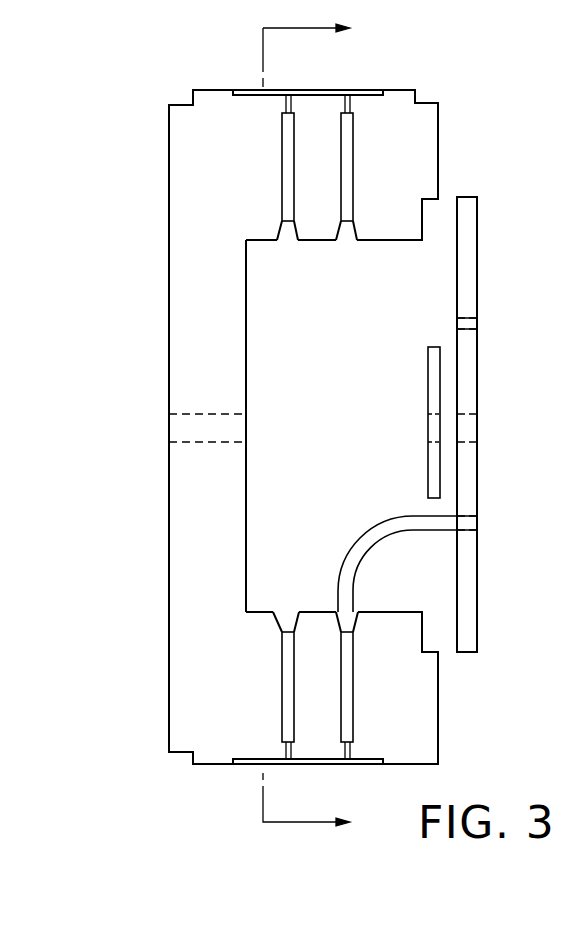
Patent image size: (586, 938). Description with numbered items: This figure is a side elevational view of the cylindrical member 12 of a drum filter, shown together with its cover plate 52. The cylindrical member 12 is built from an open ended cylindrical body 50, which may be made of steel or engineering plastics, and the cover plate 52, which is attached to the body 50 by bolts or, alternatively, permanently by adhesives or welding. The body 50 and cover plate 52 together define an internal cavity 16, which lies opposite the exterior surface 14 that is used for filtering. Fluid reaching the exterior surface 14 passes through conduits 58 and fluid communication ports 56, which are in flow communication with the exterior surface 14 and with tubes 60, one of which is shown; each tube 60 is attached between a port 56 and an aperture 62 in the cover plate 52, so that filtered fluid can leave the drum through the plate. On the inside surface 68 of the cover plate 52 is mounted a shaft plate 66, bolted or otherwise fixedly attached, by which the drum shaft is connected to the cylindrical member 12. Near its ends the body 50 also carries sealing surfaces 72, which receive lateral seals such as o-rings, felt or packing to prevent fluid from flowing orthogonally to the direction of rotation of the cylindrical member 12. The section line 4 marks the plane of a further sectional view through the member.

The section line 4- 4 is at (317, 426).
The cylindrical member 12 is at (287, 426).
The exterior surface 14 is at (365, 90).
The internal cavity 16 is at (353, 451).
The cylindrical body 50 is at (190, 678).
The cover plate 52 is at (465, 625).
The fluid communication ports 56 is at (288, 242).
The conduits 58 is at (282, 172).
The tube 60 is at (344, 539).
The apertures 62 is at (440, 323).
The shaft plate 66 is at (428, 481).
The inside surface 68 is at (441, 569).
The sealing surfaces 72 is at (196, 81).